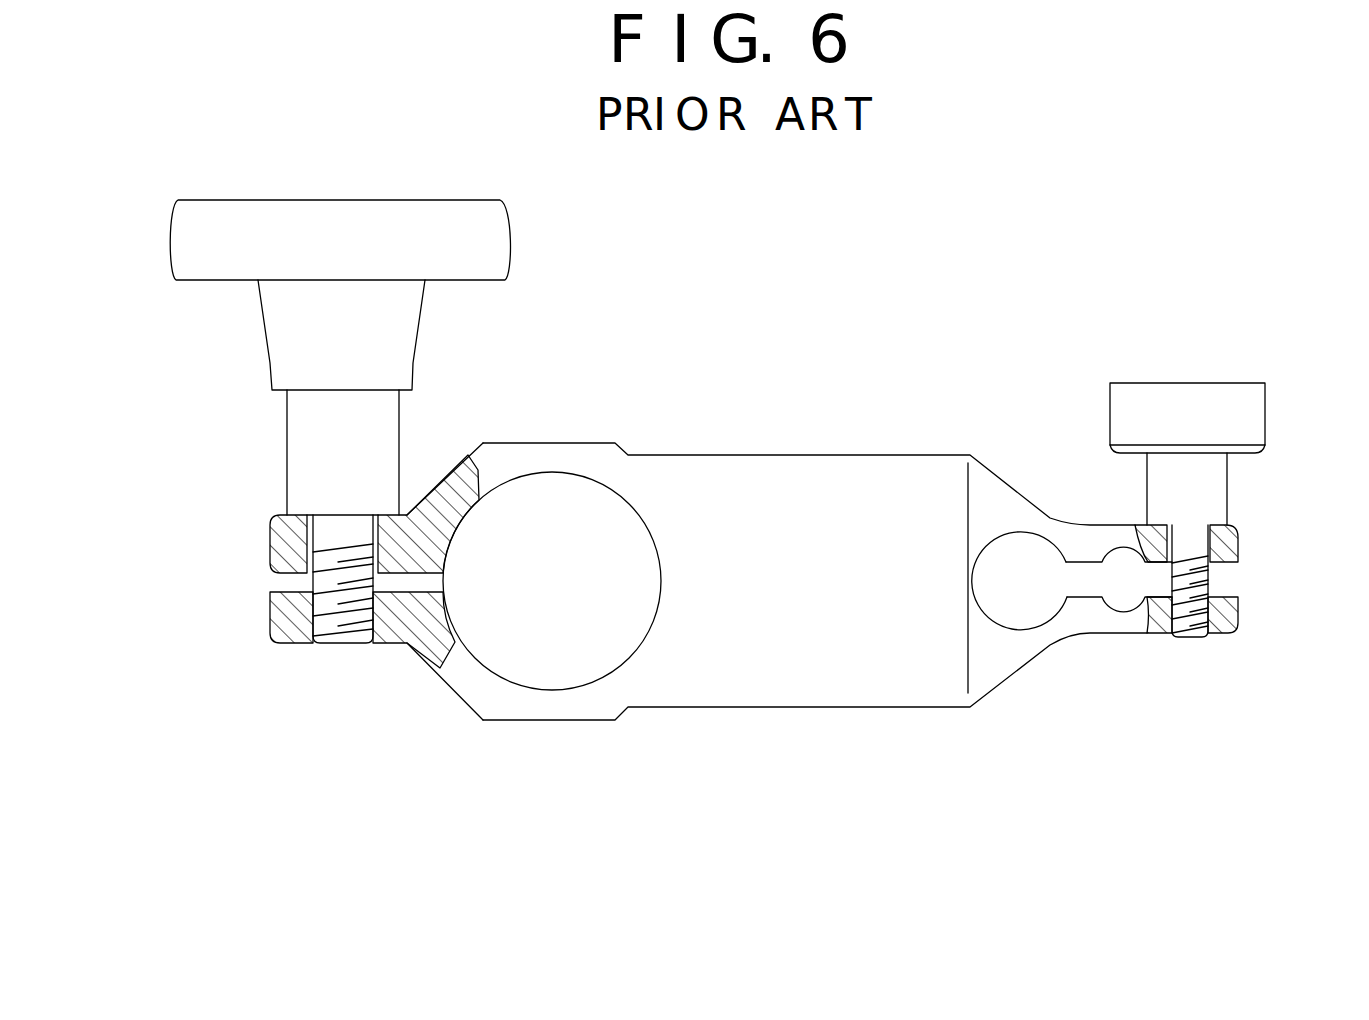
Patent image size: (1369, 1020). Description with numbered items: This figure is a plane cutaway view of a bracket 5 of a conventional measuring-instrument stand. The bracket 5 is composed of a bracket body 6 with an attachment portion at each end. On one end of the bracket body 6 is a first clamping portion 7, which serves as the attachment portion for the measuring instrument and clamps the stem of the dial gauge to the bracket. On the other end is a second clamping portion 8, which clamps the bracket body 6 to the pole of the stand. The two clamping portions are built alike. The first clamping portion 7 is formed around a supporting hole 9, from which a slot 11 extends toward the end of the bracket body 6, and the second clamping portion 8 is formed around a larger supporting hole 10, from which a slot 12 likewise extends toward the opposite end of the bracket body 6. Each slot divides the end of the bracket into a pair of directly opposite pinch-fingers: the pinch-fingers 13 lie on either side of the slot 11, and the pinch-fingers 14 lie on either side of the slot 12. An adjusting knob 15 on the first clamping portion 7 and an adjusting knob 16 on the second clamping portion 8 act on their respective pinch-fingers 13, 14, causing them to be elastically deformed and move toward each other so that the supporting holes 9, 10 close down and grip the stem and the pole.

The bracket 5 is at (840, 465).
The bracket body 6 is at (811, 703).
The first clamping portion 7 is at (1183, 768).
The second clamping portion 8 is at (305, 785).
The supporting hole 9 is at (1018, 635).
The supporting hole 10 is at (555, 690).
The slot 11 is at (1228, 580).
The slot 12 is at (270, 580).
The pinch-fingers 13 is at (1238, 545).
The pinch-fingers 14 is at (270, 538).
The adjusting knob 15 is at (1188, 383).
The adjusting knob 16 is at (398, 207).